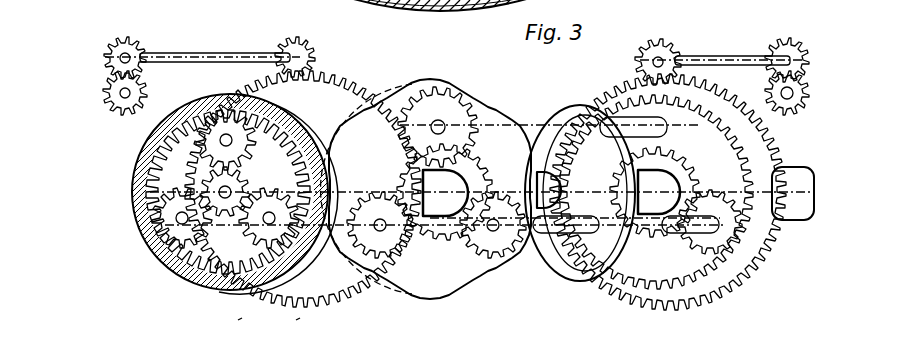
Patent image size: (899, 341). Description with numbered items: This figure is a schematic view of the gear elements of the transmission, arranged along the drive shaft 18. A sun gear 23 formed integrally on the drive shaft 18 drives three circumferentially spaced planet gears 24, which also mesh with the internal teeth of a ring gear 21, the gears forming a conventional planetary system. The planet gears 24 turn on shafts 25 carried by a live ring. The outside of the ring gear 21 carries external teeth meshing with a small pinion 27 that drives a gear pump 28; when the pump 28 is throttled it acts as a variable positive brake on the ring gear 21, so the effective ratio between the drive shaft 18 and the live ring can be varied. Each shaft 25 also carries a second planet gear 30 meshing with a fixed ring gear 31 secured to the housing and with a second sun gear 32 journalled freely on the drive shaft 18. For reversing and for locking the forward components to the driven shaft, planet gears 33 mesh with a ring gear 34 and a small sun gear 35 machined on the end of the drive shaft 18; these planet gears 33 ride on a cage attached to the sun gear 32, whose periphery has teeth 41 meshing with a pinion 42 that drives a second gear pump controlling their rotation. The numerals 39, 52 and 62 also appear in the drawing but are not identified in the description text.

The drive shaft 18 is at (792, 208).
The ring gear 21 is at (667, 310).
The sun gear 23 is at (693, 170).
The planet gears 24 is at (677, 125).
The shafts 25 is at (535, 135).
The pinion 27 is at (662, 45).
The gear pump 28 is at (793, 40).
The second planet gear 30 is at (432, 112).
The fixed ring gear 31 is at (464, 98).
The second sun gear 32 is at (442, 230).
The planet gears 33 is at (208, 158).
The ring gear 34 is at (140, 153).
The sun gear 35 is at (233, 218).
The gear 39 is at (108, 91).
The teeth 41 is at (327, 93).
The pinion 42 is at (291, 44).
The member 52 is at (242, 329).
The member 62 is at (299, 329).